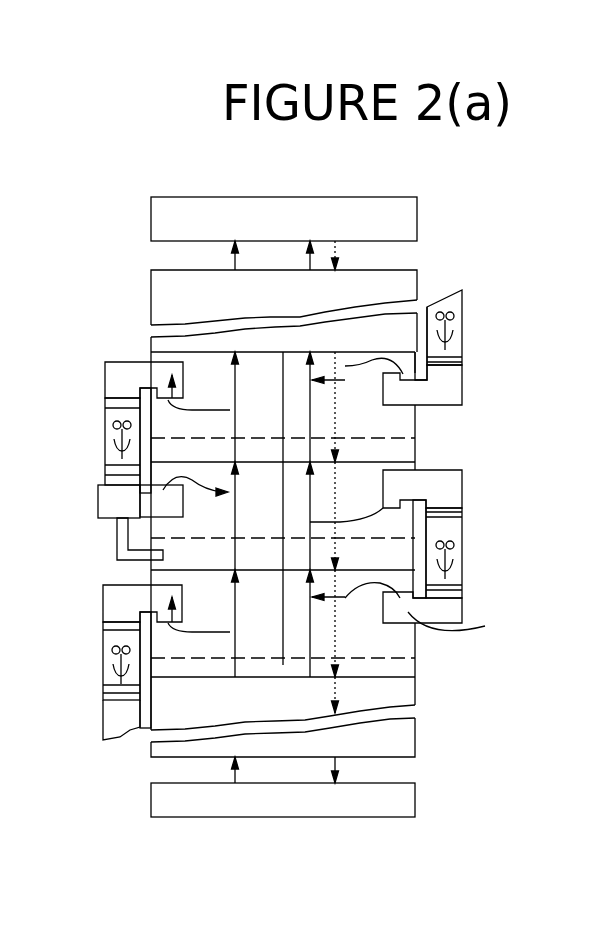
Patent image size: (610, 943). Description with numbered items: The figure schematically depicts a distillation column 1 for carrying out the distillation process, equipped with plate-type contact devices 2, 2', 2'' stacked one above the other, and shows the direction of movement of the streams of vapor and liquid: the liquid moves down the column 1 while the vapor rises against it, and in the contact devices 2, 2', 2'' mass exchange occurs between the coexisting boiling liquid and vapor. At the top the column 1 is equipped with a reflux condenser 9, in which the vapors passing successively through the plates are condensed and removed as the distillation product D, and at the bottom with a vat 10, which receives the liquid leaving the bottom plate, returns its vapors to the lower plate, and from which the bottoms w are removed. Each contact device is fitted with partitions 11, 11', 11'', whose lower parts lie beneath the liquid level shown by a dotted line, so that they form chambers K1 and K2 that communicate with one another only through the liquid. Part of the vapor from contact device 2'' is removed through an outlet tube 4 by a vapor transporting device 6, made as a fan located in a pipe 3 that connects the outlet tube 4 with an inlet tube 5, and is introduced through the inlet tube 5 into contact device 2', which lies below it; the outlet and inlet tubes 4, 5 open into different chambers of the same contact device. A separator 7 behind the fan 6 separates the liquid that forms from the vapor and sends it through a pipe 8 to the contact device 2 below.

In FIG. 2A, the distillation column 1 is at (150, 712).
In FIG. 2A, the contact device 2 is at (283, 567).
In FIG. 2A, the contact device 2' is at (109, 568).
In FIG. 2A, the contact device 2'' is at (111, 436).
In FIG. 2A, the pipe 3 is at (112, 380).
The vapor outlet tube 4 is at (168, 378).
In FIG. 2A, the vapor inlet tube 5 is at (145, 478).
In FIG. 2A, the vapor transporting device 6 is at (118, 410).
In FIG. 2A, the separator 7 is at (120, 500).
In FIG. 2A, the pipe 8 is at (130, 553).
In FIG. 2A, the reflux condenser 9 is at (417, 237).
In FIG. 2A, the vat 10 is at (415, 793).
The partition 11 is at (317, 534).
The partition 11' is at (419, 553).
The partition 11'' is at (343, 397).
In FIG. 2A, the chamber K1 is at (269, 508).
In FIG. 2A, the chamber K2 is at (293, 385).
In FIG. 2A, the distillation product D is at (350, 251).
In FIG. 2A, the bottoms w is at (425, 795).